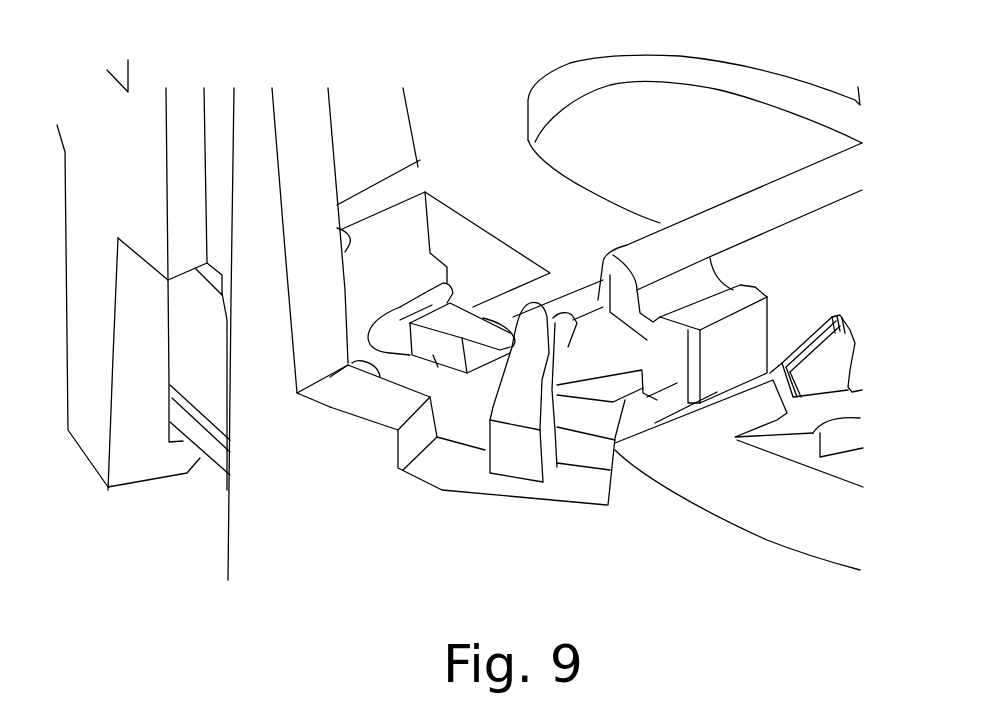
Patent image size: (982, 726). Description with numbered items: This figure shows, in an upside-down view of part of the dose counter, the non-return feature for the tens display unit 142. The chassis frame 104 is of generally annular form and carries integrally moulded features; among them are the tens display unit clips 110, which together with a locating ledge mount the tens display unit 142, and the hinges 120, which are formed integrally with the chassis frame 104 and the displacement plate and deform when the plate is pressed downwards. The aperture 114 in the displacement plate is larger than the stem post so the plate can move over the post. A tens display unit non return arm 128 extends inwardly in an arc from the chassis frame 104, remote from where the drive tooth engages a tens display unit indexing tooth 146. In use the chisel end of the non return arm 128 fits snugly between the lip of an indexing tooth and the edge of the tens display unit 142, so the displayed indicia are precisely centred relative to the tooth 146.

The chassis frame 104 is at (268, 468).
The tens display unit clips 110 is at (130, 467).
The aperture 114 is at (700, 154).
The hinges 120 is at (650, 345).
The tens display unit non return arm 128 is at (487, 352).
The tens display unit 142 is at (440, 412).
The tens display unit indexing tooth 146 is at (385, 335).